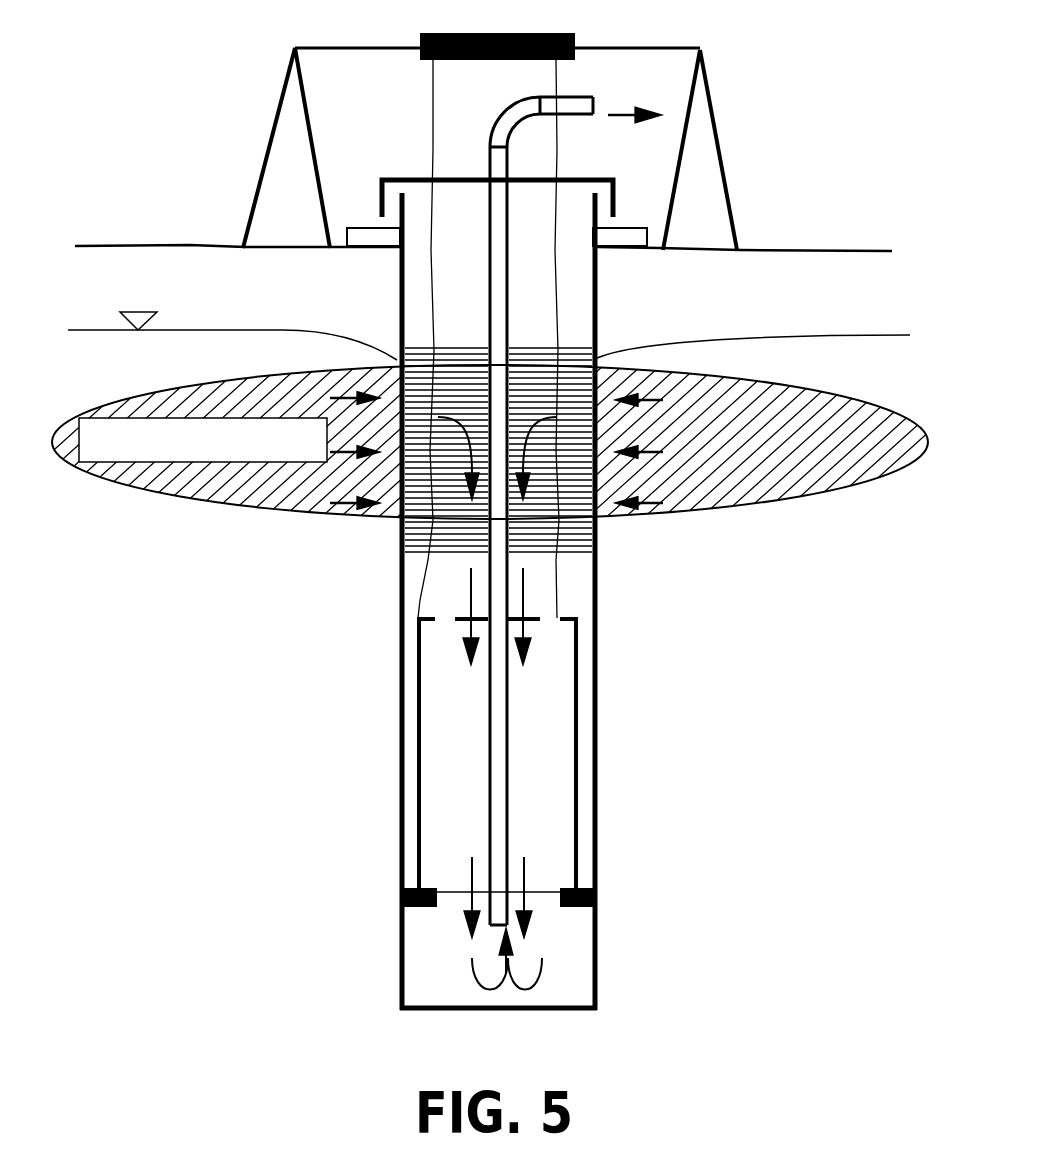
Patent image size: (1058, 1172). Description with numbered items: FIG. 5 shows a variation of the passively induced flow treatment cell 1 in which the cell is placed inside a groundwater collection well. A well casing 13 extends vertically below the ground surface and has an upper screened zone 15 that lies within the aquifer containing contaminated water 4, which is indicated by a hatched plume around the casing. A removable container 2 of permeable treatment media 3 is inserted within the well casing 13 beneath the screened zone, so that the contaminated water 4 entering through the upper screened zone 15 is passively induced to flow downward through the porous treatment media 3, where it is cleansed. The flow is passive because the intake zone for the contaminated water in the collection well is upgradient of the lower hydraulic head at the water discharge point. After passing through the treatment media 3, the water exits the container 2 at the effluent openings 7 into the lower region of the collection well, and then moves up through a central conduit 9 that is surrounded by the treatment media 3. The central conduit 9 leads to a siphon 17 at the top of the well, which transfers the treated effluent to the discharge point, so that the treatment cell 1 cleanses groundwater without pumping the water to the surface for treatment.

The treatment cell 1 is at (362, 658).
The container 2 is at (578, 842).
The treatment media 3 is at (538, 810).
The water 4 is at (760, 498).
The effluent openings 7 is at (565, 908).
The central conduit 9 is at (488, 777).
The well casing 13 is at (597, 720).
The upper screened zone 15 is at (543, 365).
The siphon 17 is at (605, 95).